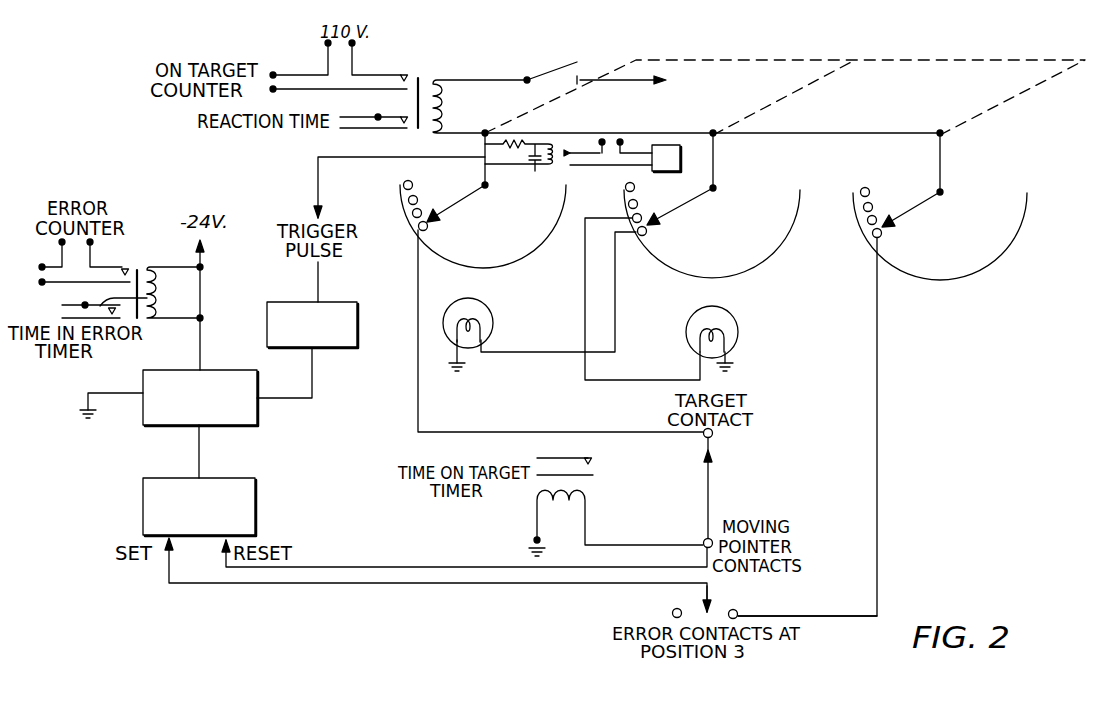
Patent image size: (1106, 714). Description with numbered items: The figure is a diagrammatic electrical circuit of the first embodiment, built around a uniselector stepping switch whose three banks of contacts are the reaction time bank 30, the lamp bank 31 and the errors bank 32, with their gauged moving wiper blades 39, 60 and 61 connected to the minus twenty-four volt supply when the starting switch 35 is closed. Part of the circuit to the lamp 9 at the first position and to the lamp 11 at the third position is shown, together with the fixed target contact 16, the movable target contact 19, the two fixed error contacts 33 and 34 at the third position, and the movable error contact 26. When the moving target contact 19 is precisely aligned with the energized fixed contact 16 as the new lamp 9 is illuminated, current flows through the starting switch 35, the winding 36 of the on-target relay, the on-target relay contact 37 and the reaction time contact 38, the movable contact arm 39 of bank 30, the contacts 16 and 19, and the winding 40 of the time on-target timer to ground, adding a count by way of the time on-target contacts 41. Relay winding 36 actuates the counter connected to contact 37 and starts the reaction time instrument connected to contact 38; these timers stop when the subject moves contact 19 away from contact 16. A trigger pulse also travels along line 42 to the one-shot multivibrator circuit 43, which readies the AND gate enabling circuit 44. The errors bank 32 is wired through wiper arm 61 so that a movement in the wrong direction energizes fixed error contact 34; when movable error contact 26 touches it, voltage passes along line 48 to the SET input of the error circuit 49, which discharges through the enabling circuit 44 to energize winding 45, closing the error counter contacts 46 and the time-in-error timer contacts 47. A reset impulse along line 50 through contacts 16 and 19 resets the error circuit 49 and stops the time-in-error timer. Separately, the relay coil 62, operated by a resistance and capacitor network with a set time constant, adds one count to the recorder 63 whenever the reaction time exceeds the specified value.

The lamp 9 is at (493, 313).
The lamp 11 is at (738, 322).
The fixed target contact 16 is at (713, 435).
The movable target contact 19 is at (712, 452).
The movable error contact 26 is at (710, 606).
The reaction time bank 30 is at (521, 262).
The lamp bank 31 is at (777, 247).
The errors bank 32 is at (990, 262).
The fixed error contact 33 is at (672, 612).
The fixed error contact 34 is at (737, 610).
The starting switch 35 is at (550, 74).
The winding 36 is at (439, 80).
The on-target relay contact 37 is at (398, 74).
The reaction time contact 38 is at (396, 125).
The movable contact arm 39 is at (458, 205).
The winding 40 is at (586, 499).
The time on-target contacts 41 is at (586, 465).
The line 42 is at (318, 172).
The one-shot multivibrator circuit 43 is at (337, 349).
The AND gate circuit 44 is at (258, 415).
The winding 45 is at (168, 265).
The error counter contacts 46 is at (122, 268).
The time-in-error timer contacts 47 is at (160, 299).
The line 48 is at (383, 583).
The error circuit 49 is at (256, 488).
The line 50 is at (418, 567).
The moving wiper blade 60 is at (684, 206).
The moving wiper blade 61 is at (907, 211).
The relay coil 62 is at (552, 173).
The recorder 63 is at (651, 104).